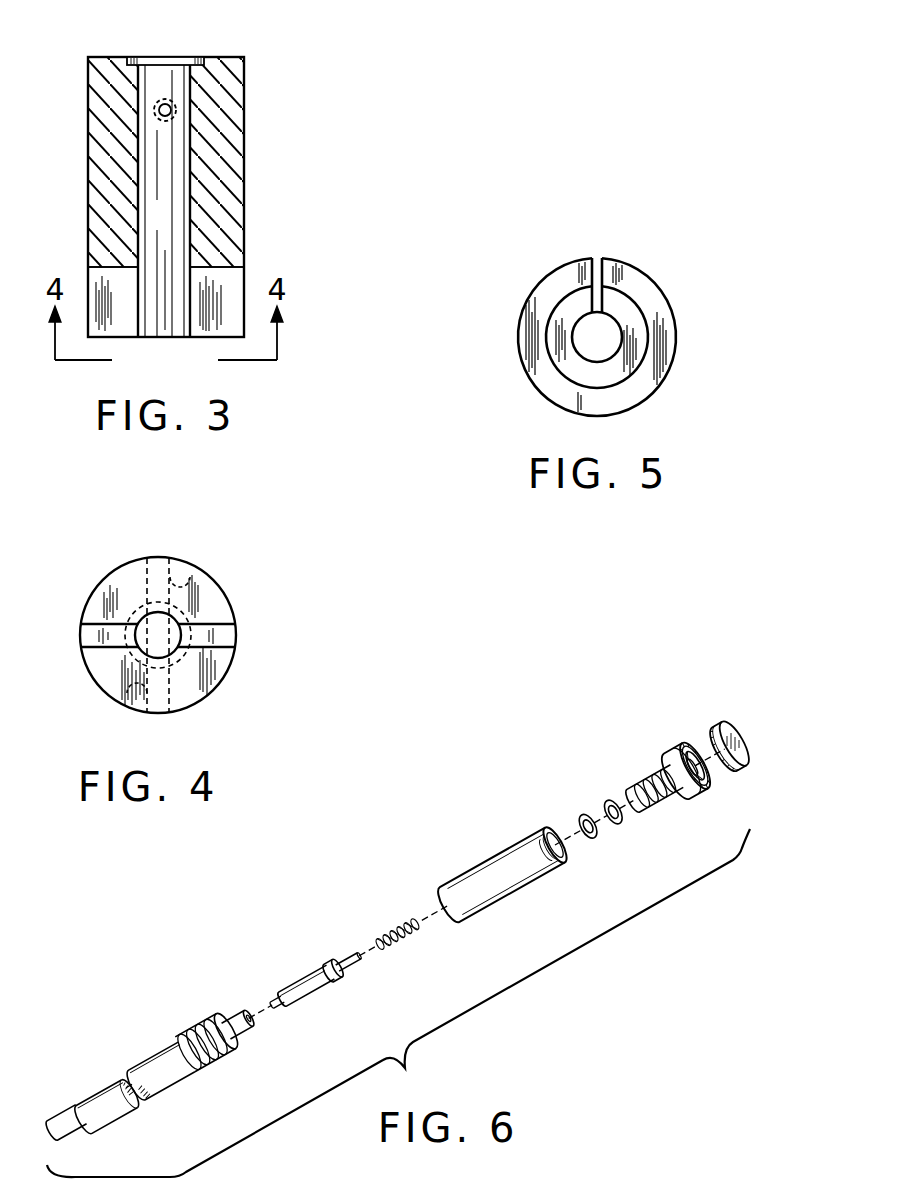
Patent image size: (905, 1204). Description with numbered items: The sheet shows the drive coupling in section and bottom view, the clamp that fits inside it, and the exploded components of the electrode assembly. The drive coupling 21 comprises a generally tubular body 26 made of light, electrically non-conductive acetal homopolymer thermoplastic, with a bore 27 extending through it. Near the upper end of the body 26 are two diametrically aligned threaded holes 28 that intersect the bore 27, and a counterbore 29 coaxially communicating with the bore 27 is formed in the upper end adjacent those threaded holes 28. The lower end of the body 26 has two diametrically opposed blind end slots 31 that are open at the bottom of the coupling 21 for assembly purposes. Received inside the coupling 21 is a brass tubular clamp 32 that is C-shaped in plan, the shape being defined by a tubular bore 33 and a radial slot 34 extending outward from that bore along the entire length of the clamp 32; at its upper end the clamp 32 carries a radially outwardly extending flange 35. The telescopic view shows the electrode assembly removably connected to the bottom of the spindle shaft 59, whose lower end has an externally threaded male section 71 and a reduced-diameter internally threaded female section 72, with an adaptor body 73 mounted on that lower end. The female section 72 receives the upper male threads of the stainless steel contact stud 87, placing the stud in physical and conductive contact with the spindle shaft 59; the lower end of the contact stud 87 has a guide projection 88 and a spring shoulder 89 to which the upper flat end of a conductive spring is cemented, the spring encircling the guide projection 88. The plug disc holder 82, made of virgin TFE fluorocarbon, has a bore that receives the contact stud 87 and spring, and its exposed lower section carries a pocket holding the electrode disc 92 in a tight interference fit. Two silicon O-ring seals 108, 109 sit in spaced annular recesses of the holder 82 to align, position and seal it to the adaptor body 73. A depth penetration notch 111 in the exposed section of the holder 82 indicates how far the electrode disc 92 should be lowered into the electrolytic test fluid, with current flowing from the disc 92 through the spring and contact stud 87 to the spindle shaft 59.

In FIG. 3, the drive coupling 21 is at (262, 180).
In FIG. 4, the drive coupling 21 is at (74, 591).
In FIG. 3, the tubular body 26 is at (230, 62).
In FIG. 4, the tubular body 26 is at (222, 604).
In FIG. 3, the bore 27 is at (167, 192).
In FIG. 4, the bore 27 is at (150, 632).
In FIG. 3, the threaded holes 28 is at (167, 98).
In FIG. 4, the threaded holes 28 is at (176, 580).
In FIG. 3, the counterbore 29 is at (152, 57).
In FIG. 4, the counterbore 29 is at (187, 702).
In FIG. 3, the blind end slots 31 is at (123, 307).
In FIG. 4, the blind end slots 31 is at (92, 638).
In FIG. 5, the tubular clamp 32 is at (566, 305).
In FIG. 5, the tubular bore 33 is at (607, 331).
In FIG. 5, the radial slot 34 is at (597, 256).
In FIG. 5, the flange 35 is at (545, 381).
In FIG. 6, the spindle shaft 59 is at (150, 1057).
In FIG. 6, the externally threaded male section 71 is at (208, 1023).
In FIG. 6, the internally threaded female section 72 is at (247, 1015).
In FIG. 6, the adaptor body 73 is at (478, 868).
In FIG. 6, the plug disc holder 82 is at (687, 797).
In FIG. 6, the contact stud 87 is at (303, 995).
In FIG. 6, the guide projection 88 is at (343, 963).
In FIG. 6, the spring shoulder 89 is at (333, 981).
In FIG. 6, the electrode disc 92 is at (738, 768).
In FIG. 6, the O-ring seal 108 is at (580, 811).
In FIG. 6, the O-ring seal 109 is at (608, 795).
In FIG. 6, the depth penetration notch 111 is at (670, 748).